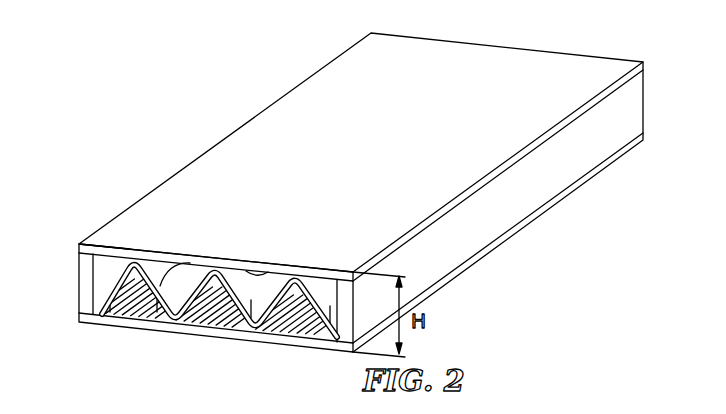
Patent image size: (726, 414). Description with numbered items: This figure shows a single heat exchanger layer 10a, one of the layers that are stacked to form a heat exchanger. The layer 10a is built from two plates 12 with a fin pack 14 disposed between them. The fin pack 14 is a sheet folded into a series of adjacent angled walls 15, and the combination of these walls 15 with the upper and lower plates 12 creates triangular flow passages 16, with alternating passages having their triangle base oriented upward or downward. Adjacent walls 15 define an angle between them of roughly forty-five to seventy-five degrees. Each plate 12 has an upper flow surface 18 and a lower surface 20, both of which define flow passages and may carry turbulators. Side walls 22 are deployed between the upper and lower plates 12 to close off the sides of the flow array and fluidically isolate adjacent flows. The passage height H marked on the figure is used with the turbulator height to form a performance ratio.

The heat exchanger layer 10a is at (378, 209).
The plate 12 is at (277, 123).
The fin pack 14 is at (316, 288).
The angled wall 15 is at (186, 290).
The triangular flow passage 16 is at (247, 329).
The upper flow surface 18 is at (126, 242).
The lower surface 20 is at (122, 307).
The side wall 22 is at (77, 277).